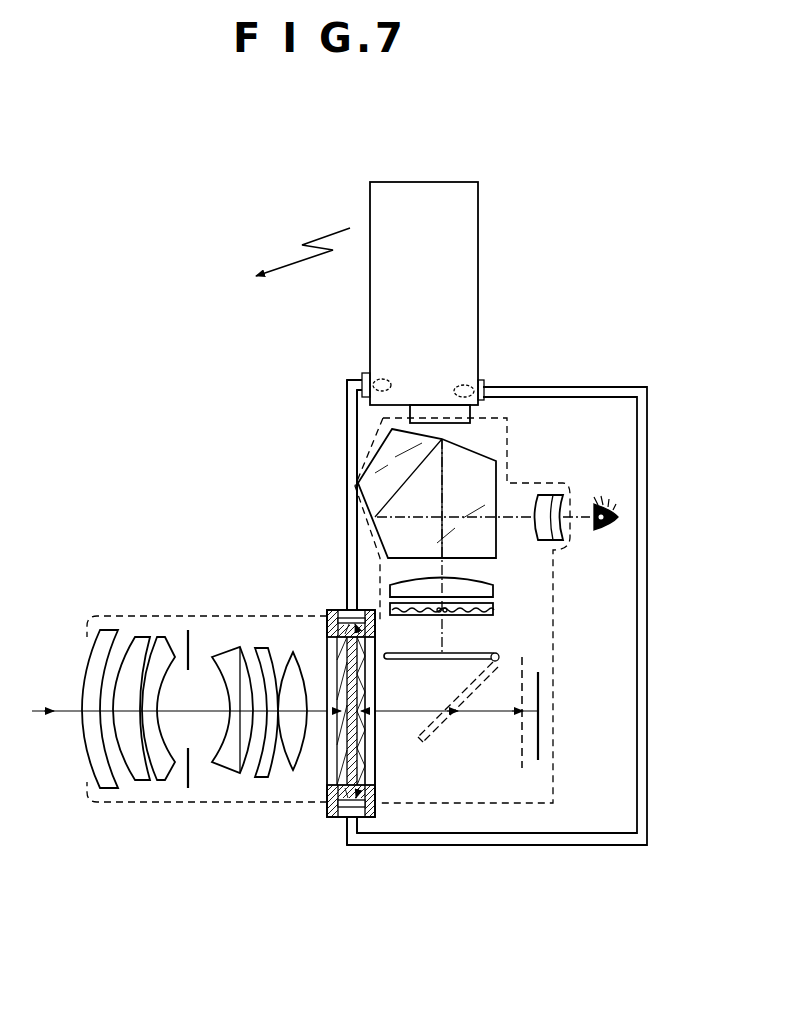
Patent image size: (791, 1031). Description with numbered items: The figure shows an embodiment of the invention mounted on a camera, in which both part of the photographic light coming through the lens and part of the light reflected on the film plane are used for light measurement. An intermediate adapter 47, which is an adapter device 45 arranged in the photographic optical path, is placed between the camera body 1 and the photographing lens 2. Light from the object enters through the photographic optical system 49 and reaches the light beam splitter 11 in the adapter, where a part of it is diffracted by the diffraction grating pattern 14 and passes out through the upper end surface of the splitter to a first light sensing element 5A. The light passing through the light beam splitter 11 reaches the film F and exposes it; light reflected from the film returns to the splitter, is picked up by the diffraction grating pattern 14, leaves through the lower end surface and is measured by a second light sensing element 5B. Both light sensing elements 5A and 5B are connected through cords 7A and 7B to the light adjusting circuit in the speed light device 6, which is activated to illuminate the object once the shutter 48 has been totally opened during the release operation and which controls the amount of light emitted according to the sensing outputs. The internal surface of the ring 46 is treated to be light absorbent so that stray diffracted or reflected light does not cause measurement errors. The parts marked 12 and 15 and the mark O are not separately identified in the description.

The camera body 1 is at (524, 473).
The photographing lens 2 is at (176, 672).
The first light sensing element 5A is at (340, 610).
The second light sensing element 5B is at (361, 808).
The speed light device 6 is at (462, 230).
The cord 7A is at (356, 467).
The cord 7B is at (550, 835).
The light beam splitter 11 is at (322, 644).
The glass plate 12 is at (368, 764).
The diffraction grating pattern 14 is at (353, 733).
The glass plate 15 is at (343, 676).
The adapter device 45 is at (333, 727).
The ring 46 is at (332, 815).
The intermediate adapter 47 is at (478, 655).
The shutter 48 is at (520, 762).
The photographic optical system 49 is at (86, 768).
The film F is at (542, 690).
The optical axis O is at (32, 710).